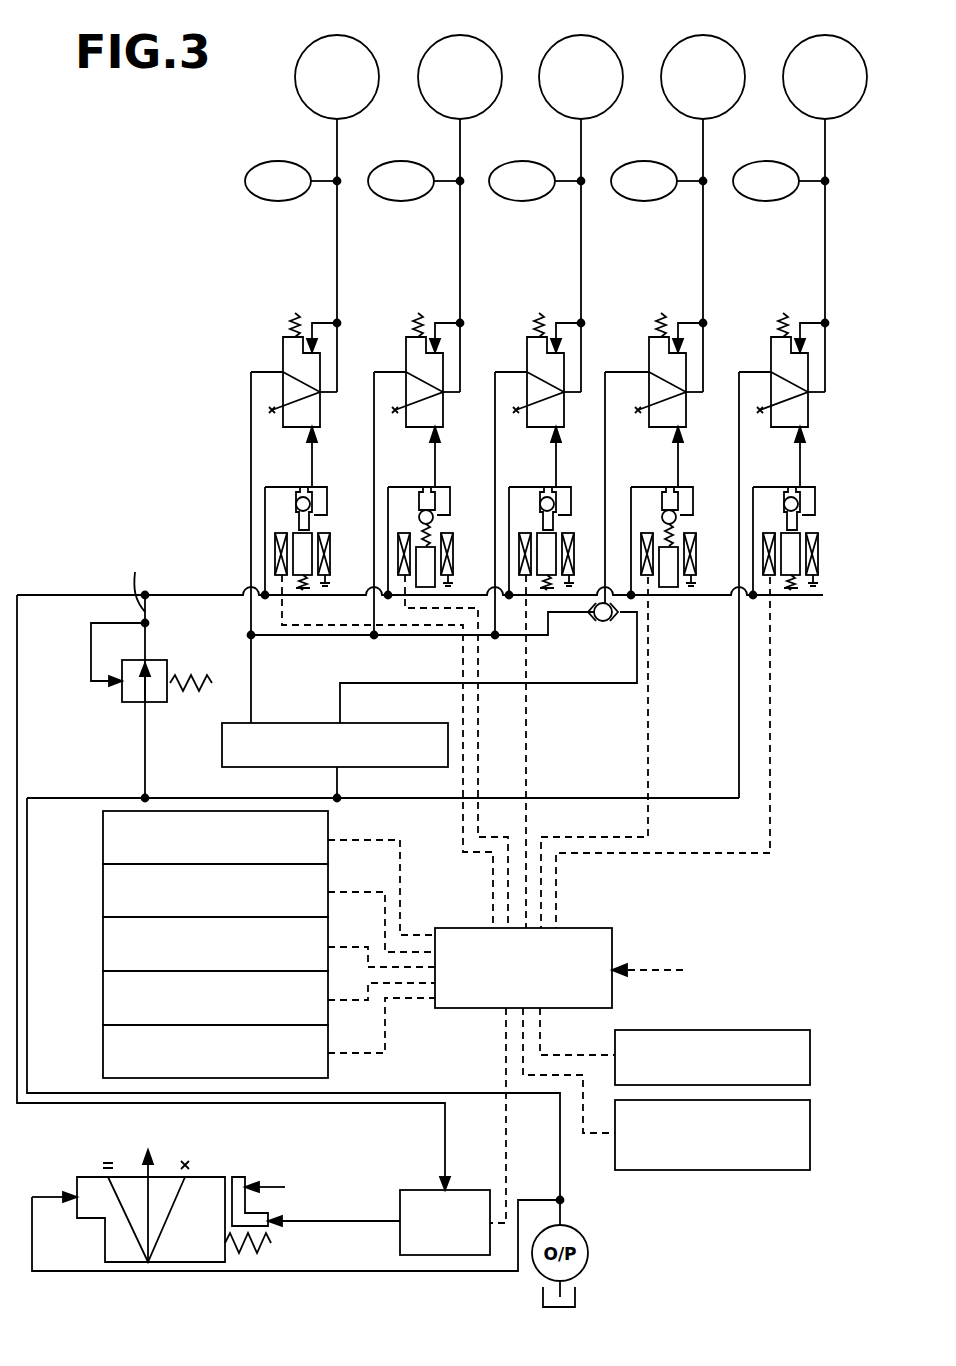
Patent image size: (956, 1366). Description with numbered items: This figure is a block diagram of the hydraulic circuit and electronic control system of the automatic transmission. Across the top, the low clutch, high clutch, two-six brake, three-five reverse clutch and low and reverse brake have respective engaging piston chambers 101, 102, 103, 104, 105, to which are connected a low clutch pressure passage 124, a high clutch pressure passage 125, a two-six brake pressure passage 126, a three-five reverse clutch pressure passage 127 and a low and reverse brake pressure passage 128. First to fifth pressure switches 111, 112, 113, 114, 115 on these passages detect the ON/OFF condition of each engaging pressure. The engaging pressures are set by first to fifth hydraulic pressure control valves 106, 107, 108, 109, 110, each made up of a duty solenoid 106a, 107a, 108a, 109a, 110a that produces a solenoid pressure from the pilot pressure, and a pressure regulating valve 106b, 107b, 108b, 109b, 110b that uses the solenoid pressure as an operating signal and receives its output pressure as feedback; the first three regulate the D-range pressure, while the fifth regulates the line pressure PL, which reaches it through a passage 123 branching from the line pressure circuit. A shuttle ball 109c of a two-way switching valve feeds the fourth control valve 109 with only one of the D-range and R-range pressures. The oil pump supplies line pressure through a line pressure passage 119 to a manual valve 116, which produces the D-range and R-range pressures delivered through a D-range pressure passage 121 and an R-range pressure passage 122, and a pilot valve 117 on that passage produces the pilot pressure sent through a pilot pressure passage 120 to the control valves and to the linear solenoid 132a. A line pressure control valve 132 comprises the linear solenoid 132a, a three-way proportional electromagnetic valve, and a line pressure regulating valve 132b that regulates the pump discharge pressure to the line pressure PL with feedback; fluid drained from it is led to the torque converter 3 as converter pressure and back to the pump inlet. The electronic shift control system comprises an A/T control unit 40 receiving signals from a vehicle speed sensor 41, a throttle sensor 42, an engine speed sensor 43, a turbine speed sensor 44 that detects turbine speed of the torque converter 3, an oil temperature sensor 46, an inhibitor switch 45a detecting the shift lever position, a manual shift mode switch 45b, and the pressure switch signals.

The torque converter 3 is at (151, 1185).
The A/T control unit 40 is at (580, 928).
The vehicle speed sensor 41 is at (103, 838).
The throttle sensor 42 is at (103, 891).
The engine speed sensor 43 is at (103, 945).
The turbine speed sensor 44 is at (103, 999).
The oil temperature sensor 46 is at (103, 1053).
The inhibitor switch 45a is at (735, 1030).
The manual shift mode switch 45b is at (755, 1170).
The engaging piston chamber 101 is at (306, 50).
The engaging piston chamber 102 is at (440, 64).
The piston chamber 103 is at (561, 64).
The piston chamber 104 is at (683, 64).
The piston chamber 105 is at (805, 64).
The first hydraulic pressure control valve 106 is at (287, 305).
The second hydraulic pressure control valve 107 is at (415, 332).
The third hydraulic pressure control valve 108 is at (536, 332).
The fourth hydraulic pressure control valve 109 is at (658, 332).
The fifth hydraulic pressure control valve 110 is at (780, 332).
The first duty solenoid 106a is at (296, 486).
The second duty solenoid 107a is at (414, 513).
The third duty solenoid 108a is at (535, 513).
The fourth duty solenoid 109a is at (657, 513).
The fifth duty solenoid 110a is at (779, 513).
The first pressure regulating valve 106b is at (274, 348).
The second pressure regulating valve 107b is at (379, 323).
The third pressure regulating valve 108b is at (500, 323).
The fourth pressure regulating valve 109b is at (622, 323).
The fifth pressure regulating valve 110b is at (744, 323).
The shuttle ball 109c is at (596, 634).
The first pressure switch 111 is at (277, 161).
The second pressure switch 112 is at (416, 147).
The third pressure switch 113 is at (537, 147).
The fourth pressure switch 114 is at (659, 147).
The fifth pressure switch 115 is at (781, 147).
The manual valve 116 is at (368, 768).
The pilot valve 117 is at (122, 690).
The line pressure passage 119 is at (243, 796).
The pilot pressure passage 120 is at (208, 595).
The D-range pressure passage 121 is at (377, 636).
The R-range pressure passage 122 is at (562, 685).
The line pressure oil passage to low and reverse brake valve 123 is at (739, 680).
The low clutch pressure passage 124 is at (335, 223).
The high clutch pressure passage 125 is at (418, 255).
The 2-6 brake pressure passage 126 is at (539, 255).
The 3-5 reverse clutch pressure passage 127 is at (661, 255).
The low and reverse brake pressure passage 128 is at (783, 255).
The line pressure control valve 132 is at (224, 1282).
The linear solenoid 132a is at (420, 1190).
The line pressure regulating valve 132b is at (223, 1168).